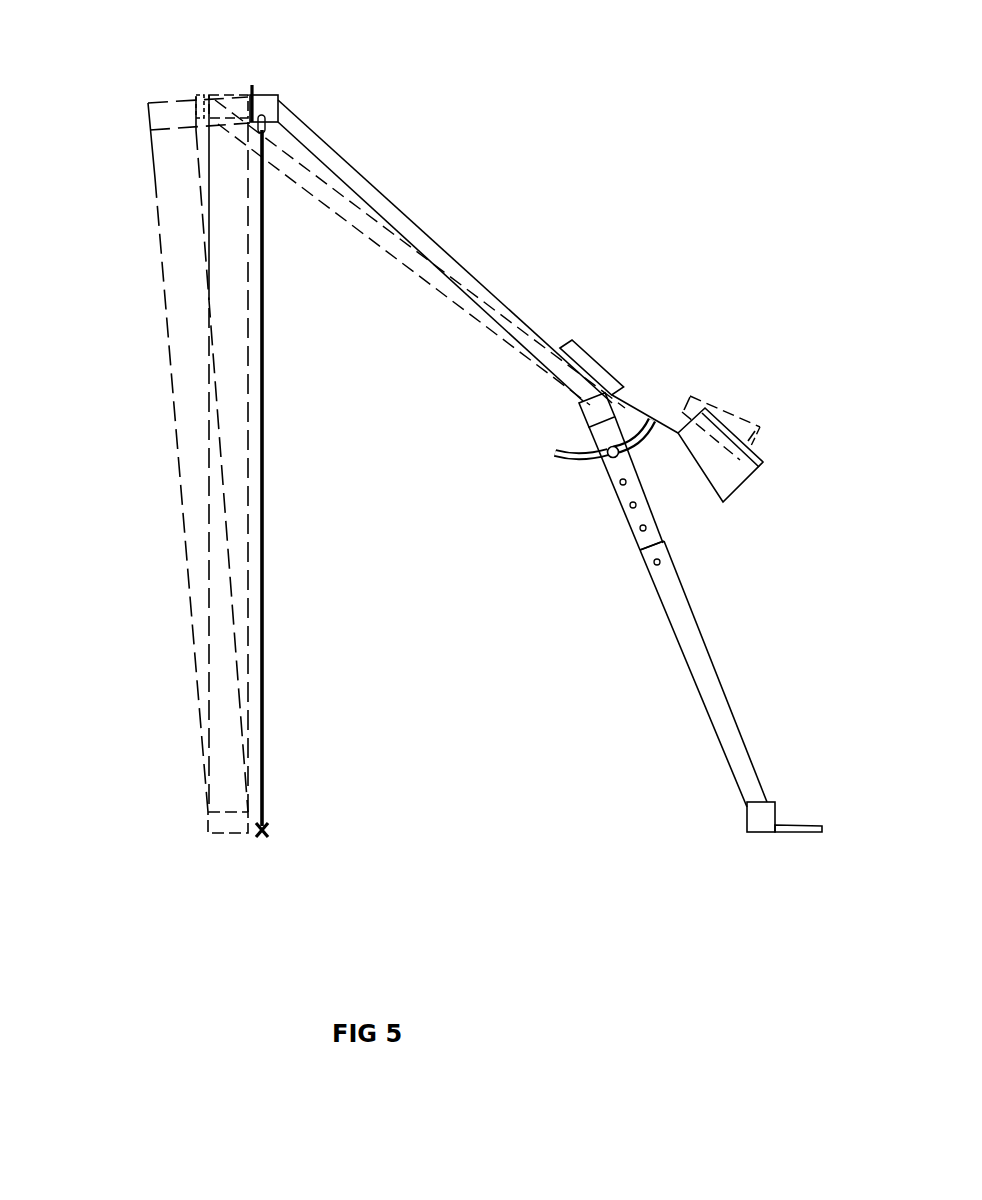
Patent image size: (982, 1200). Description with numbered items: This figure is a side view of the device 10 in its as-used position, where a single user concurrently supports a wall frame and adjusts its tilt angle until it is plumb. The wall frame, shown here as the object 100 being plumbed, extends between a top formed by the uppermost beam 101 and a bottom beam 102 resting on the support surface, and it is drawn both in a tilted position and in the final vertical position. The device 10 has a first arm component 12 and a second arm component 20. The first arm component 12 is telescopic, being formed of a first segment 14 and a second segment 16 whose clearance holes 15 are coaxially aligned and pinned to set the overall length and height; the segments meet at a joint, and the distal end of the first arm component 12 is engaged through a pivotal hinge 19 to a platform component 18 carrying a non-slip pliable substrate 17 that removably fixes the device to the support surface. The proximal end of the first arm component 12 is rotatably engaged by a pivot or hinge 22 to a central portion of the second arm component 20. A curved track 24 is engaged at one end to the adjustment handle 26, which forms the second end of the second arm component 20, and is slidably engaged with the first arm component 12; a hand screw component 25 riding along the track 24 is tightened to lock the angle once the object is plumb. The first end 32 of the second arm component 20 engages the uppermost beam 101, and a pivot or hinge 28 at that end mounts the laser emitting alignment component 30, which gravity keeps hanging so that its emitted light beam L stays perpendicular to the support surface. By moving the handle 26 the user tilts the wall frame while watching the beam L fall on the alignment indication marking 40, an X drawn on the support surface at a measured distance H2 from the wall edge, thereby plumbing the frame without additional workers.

The device 10 is at (555, 97).
The first arm component 12 is at (652, 612).
The first segment 14 is at (615, 490).
The clearance holes 15 is at (633, 508).
The second segment 16 is at (685, 662).
The non-slip pliable substrate 17 is at (658, 560).
The platform component 18 is at (792, 826).
The pivotal hinge 19 is at (757, 812).
The second arm component 20 is at (415, 222).
The pivot or hinge 22 is at (582, 410).
The track 24 is at (633, 430).
The hand screw component 25 is at (607, 458).
The adjustment handle 26 is at (695, 397).
The pivot or hinge 28 is at (270, 105).
The laser emitting alignment component 30 is at (264, 135).
The first end 32 is at (261, 76).
The alignment indication marking 40 is at (272, 836).
The panel 100 is at (160, 410).
The uppermost beam 101 is at (148, 103).
The bottom beam 102 is at (208, 816).
The measured distance H2 is at (264, 820).
The emitted light beam L is at (268, 553).